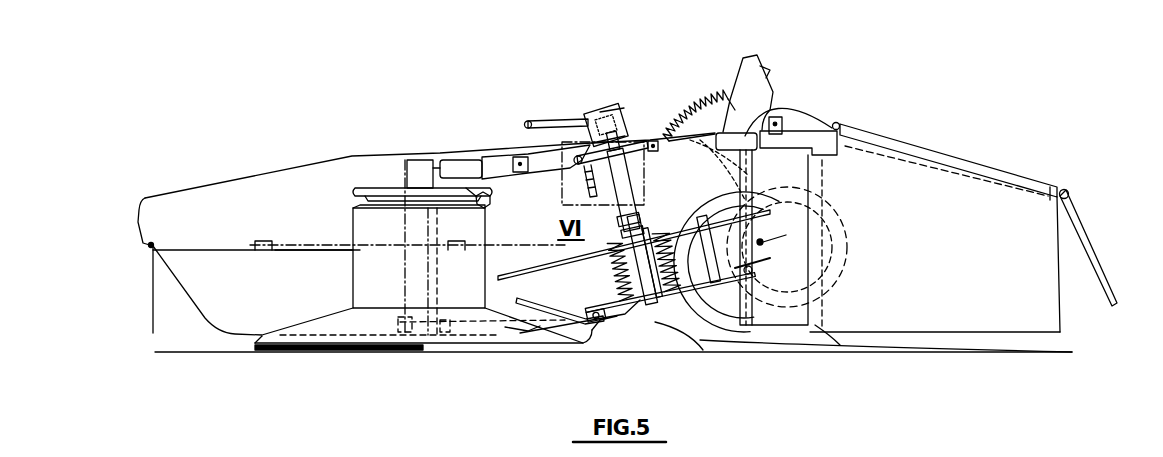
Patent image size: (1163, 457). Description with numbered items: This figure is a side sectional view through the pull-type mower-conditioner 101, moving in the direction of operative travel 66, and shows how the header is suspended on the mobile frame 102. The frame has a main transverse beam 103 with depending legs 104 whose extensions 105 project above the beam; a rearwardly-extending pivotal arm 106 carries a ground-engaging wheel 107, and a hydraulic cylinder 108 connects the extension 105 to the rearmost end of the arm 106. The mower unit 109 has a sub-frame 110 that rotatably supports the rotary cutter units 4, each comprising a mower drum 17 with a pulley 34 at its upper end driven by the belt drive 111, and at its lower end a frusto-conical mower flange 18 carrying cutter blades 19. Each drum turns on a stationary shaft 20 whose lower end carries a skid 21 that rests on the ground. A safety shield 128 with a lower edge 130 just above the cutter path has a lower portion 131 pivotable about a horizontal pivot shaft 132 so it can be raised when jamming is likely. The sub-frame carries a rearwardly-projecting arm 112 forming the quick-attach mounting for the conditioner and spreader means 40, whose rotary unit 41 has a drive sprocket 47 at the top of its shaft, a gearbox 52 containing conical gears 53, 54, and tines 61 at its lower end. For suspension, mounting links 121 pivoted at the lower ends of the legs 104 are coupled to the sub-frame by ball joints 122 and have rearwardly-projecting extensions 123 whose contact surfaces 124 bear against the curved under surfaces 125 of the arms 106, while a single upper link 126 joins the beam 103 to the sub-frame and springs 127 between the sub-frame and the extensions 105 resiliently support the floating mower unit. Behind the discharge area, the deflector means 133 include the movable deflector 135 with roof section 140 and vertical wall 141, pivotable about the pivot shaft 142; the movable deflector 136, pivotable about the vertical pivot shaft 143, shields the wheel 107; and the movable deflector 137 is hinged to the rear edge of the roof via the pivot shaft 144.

The rotary cutter unit 4 is at (337, 236).
The mower drum 17 is at (352, 282).
The mower flange 18 is at (302, 324).
The cutter blade 19 is at (255, 345).
The stationary shaft 20 is at (405, 160).
The skid 21 is at (383, 351).
The pulley 34 is at (370, 187).
The crop conditioner and spreader means 40 is at (628, 106).
The rotary conditioner and spreader unit 41 is at (608, 325).
The drive sprocket 47 is at (630, 152).
The gearbox 52 is at (600, 108).
The conical gear 53 is at (628, 115).
The conical gear 54 is at (583, 138).
The conditioner and spreader tine 61 is at (549, 270).
The direction of operative travel 66 is at (325, 128).
The mower-conditioner 101 is at (801, 89).
The mobile frame 102 is at (790, 100).
The main transverse beam 103 is at (805, 120).
The leg 104 is at (663, 312).
The extension 105 is at (760, 60).
The pivotal arm 106 is at (710, 267).
The ground-engaging wheel 107 is at (845, 352).
The hydraulic cylinder 108 is at (850, 132).
The mower unit 109 is at (440, 145).
The sub-frame 110 is at (472, 160).
The belt drive 111 is at (490, 205).
The rearwardly-projecting arm 112 is at (516, 182).
The mounting link 121 is at (592, 338).
The ball joint 122 is at (520, 333).
The rearwardly-projecting extension 123 is at (745, 290).
The contact surface 124 is at (750, 248).
The curved under surface 125 is at (735, 270).
The upper link 126 is at (540, 150).
The spring 127 is at (695, 115).
The safety shield 128 is at (140, 241).
The lower edge 130 is at (325, 345).
The lower portion 131 is at (200, 310).
The horizontal pivot shaft 132 is at (255, 247).
The deflector means 133 is at (1064, 164).
The movable deflector 135 is at (975, 165).
The movable deflector 136 is at (772, 204).
The movable deflector 137 is at (1095, 255).
The roof section 140 is at (1032, 172).
The vertical wall 141 is at (982, 273).
The pivot shaft 142 is at (878, 138).
The vertical pivot shaft 143 is at (815, 340).
The pivot shaft 144 is at (1076, 192).